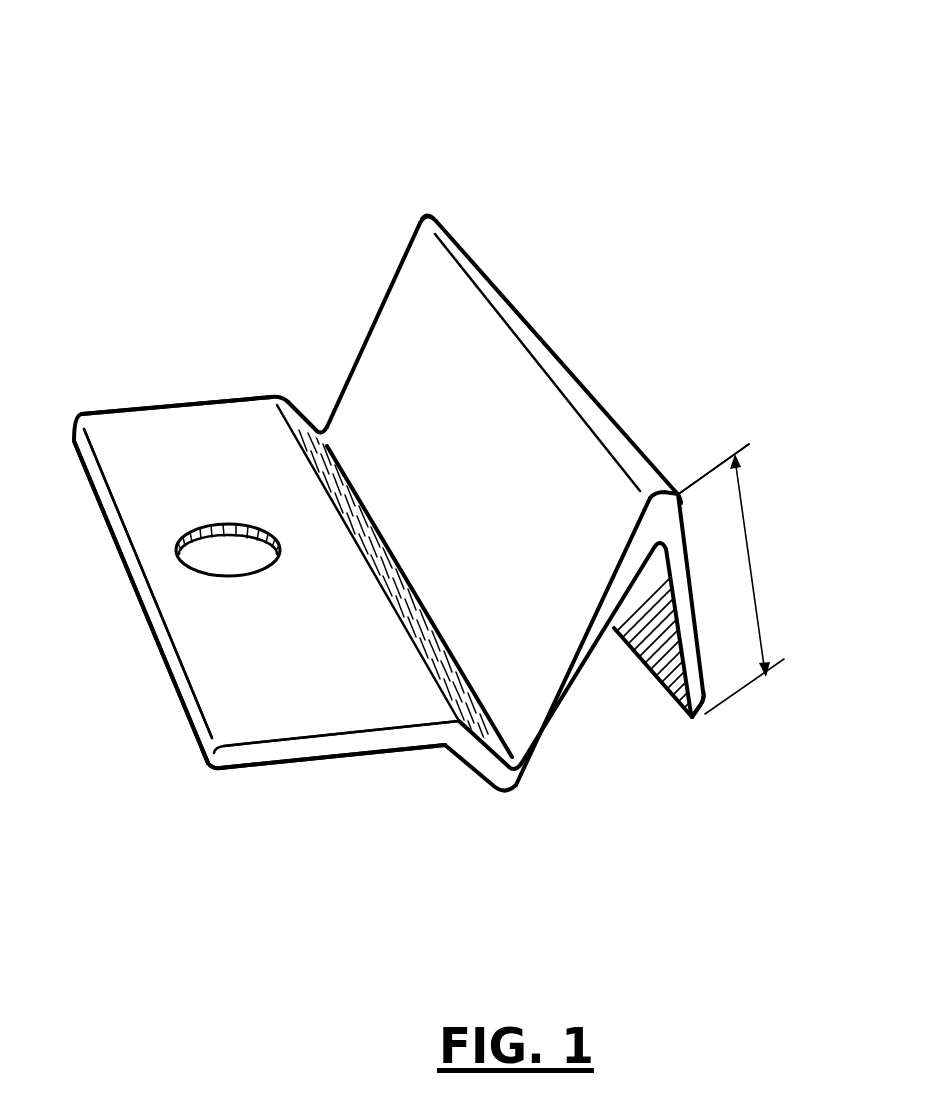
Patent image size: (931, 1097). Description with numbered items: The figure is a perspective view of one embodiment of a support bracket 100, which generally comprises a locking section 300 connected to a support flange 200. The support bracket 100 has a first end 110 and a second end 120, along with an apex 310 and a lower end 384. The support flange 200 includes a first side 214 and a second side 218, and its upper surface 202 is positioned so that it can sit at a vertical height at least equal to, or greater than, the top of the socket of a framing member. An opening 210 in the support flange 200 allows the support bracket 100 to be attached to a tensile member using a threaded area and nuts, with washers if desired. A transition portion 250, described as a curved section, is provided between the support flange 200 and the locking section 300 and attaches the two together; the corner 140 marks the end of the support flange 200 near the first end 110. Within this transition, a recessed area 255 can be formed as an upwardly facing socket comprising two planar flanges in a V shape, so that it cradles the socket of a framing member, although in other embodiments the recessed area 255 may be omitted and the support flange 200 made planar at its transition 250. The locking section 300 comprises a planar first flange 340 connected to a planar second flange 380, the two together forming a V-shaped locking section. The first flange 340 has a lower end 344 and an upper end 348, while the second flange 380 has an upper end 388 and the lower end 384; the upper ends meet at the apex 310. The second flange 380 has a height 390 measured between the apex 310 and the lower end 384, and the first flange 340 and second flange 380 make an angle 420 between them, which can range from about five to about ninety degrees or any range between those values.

The support bracket 100 is at (178, 138).
The first end 110 is at (147, 613).
The second end 120 is at (714, 450).
The corner 140 is at (188, 765).
The support flange 200 is at (303, 664).
The upper surface 202 is at (167, 425).
The opening 210 is at (246, 562).
The first side 214 is at (197, 398).
The second side 218 is at (358, 736).
The transition portion 250 is at (317, 428).
The recessed area 255 is at (466, 626).
The locking section 300 is at (745, 725).
The apex 310 is at (593, 413).
The first flange 340 is at (491, 492).
The lower end 344 is at (510, 792).
The upper end 348 is at (425, 212).
The upper end 388 is at (427, 217).
The second flange 380 is at (603, 288).
The lower end 384 is at (689, 718).
The height 390 is at (732, 579).
The angle 420 is at (664, 639).